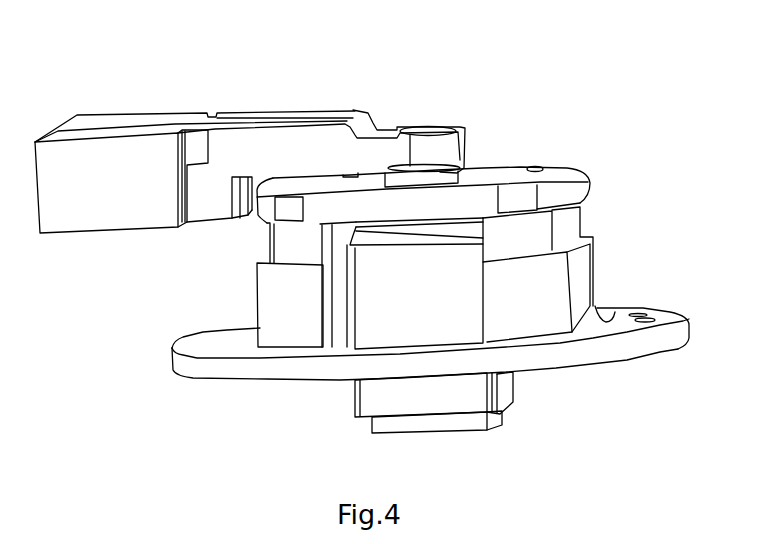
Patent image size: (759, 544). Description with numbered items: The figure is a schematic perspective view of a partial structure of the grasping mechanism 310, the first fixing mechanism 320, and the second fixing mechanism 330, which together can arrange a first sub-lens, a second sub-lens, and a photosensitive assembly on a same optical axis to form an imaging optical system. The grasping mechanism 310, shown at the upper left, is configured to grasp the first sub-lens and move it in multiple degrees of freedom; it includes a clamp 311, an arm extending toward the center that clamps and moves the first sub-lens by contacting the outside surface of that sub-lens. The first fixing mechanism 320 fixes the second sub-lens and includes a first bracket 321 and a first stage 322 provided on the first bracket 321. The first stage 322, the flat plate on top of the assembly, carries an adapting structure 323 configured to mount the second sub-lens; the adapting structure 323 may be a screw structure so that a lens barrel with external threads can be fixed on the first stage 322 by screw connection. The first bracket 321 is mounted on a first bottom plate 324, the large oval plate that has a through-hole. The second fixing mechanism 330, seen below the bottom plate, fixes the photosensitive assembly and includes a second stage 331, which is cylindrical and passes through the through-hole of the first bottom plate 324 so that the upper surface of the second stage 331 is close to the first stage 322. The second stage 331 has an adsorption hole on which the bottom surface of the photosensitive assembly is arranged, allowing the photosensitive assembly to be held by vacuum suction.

The grasping mechanism 310 is at (126, 105).
The clamp 311 is at (297, 140).
The first fixing mechanism 320 is at (381, 192).
The first bracket 321 is at (307, 303).
The first stage 322 is at (572, 193).
The adapting structure 323 is at (438, 178).
The first bottom plate 324 is at (653, 343).
The second fixing mechanism 330 is at (506, 428).
The second stage 331 is at (377, 343).